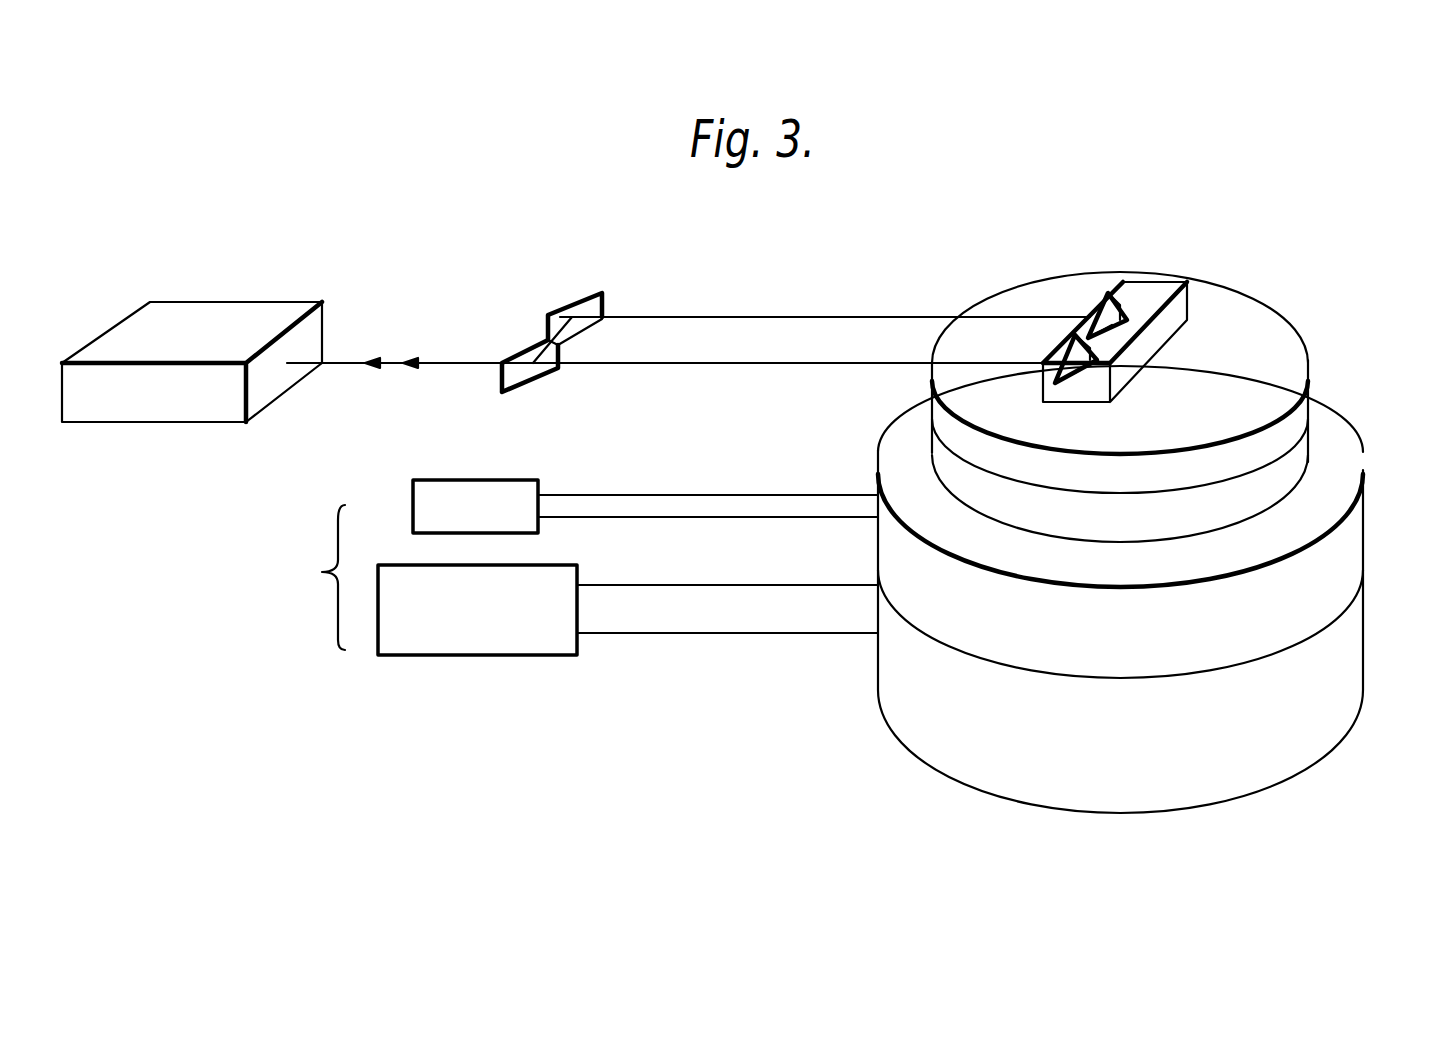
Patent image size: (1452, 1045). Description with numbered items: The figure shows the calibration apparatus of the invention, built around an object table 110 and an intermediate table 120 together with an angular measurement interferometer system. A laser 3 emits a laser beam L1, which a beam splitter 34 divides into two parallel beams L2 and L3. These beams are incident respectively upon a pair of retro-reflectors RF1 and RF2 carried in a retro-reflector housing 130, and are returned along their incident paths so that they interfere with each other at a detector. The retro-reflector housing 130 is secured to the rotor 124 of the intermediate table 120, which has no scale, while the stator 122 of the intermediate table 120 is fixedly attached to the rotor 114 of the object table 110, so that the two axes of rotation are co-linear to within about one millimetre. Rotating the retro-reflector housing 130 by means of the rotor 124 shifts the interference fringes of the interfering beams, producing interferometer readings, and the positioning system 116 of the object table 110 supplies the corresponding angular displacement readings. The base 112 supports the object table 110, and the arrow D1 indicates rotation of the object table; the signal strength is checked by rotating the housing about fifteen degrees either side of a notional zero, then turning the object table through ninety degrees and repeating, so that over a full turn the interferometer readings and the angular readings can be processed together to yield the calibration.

The laser 3 is at (118, 407).
The beam splitter 34 is at (535, 315).
The laser beam L1 is at (353, 363).
The parallel beam L2 is at (688, 317).
The parallel beam L3 is at (667, 365).
The retro-reflector housing 130 is at (1090, 302).
The retro-reflector RF1 is at (1108, 300).
The retro-reflector RF2 is at (1062, 350).
The intermediate table 120 is at (1268, 332).
The rotor of the intermediate table 124 is at (1290, 418).
The stator of the intermediate table 122 is at (1297, 452).
The rotor of the object table 114 is at (1345, 543).
The base 112 is at (1237, 772).
The object table 110 is at (1159, 551).
The positioning system 116 is at (322, 572).
The direction of rotation D1 is at (1012, 663).